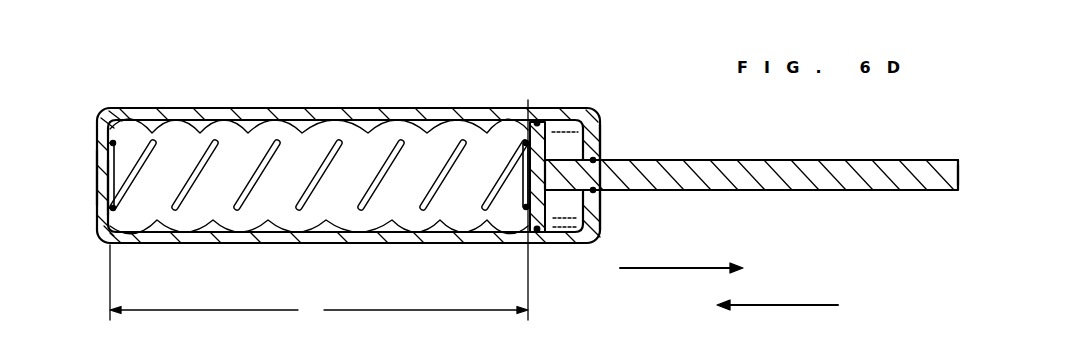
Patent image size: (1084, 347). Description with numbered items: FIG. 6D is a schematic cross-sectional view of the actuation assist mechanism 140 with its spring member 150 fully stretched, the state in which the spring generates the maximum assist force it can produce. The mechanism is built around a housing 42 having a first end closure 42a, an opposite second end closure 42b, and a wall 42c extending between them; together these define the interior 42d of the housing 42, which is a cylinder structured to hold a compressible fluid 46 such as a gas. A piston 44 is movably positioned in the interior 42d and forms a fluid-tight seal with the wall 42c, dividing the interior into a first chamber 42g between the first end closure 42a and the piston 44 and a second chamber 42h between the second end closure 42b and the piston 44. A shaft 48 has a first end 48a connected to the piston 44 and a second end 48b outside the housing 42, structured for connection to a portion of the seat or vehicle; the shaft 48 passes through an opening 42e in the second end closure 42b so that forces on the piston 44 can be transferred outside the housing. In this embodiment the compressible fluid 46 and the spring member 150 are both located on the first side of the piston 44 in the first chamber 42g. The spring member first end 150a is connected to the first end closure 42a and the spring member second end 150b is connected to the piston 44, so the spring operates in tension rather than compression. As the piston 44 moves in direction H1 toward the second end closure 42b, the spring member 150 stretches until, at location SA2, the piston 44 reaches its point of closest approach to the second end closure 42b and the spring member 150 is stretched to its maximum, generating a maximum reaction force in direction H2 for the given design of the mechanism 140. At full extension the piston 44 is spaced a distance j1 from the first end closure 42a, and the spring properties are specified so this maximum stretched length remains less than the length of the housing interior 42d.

The housing 42 is at (313, 108).
The first end closure 42a is at (97, 177).
The second end closure 42b is at (603, 137).
The wall 42c is at (248, 113).
The interior 42d is at (380, 153).
The opening 42e is at (597, 192).
The first chamber 42g is at (120, 115).
The second chamber 42h is at (577, 133).
The piston 44 is at (525, 206).
The compressible fluid 46 is at (104, 192).
The shaft 48 is at (697, 160).
The first end of the shaft 48a is at (538, 121).
The second end of the shaft 48b is at (937, 178).
The actuation assist mechanism 140 is at (832, 134).
The spring member 150 is at (300, 209).
The spring member first end 150a is at (111, 142).
The spring member second end 150b is at (525, 142).
The location SA2 is at (539, 232).
The distance j1 is at (319, 210).
The direction H1 is at (681, 278).
The direction H2 is at (777, 316).